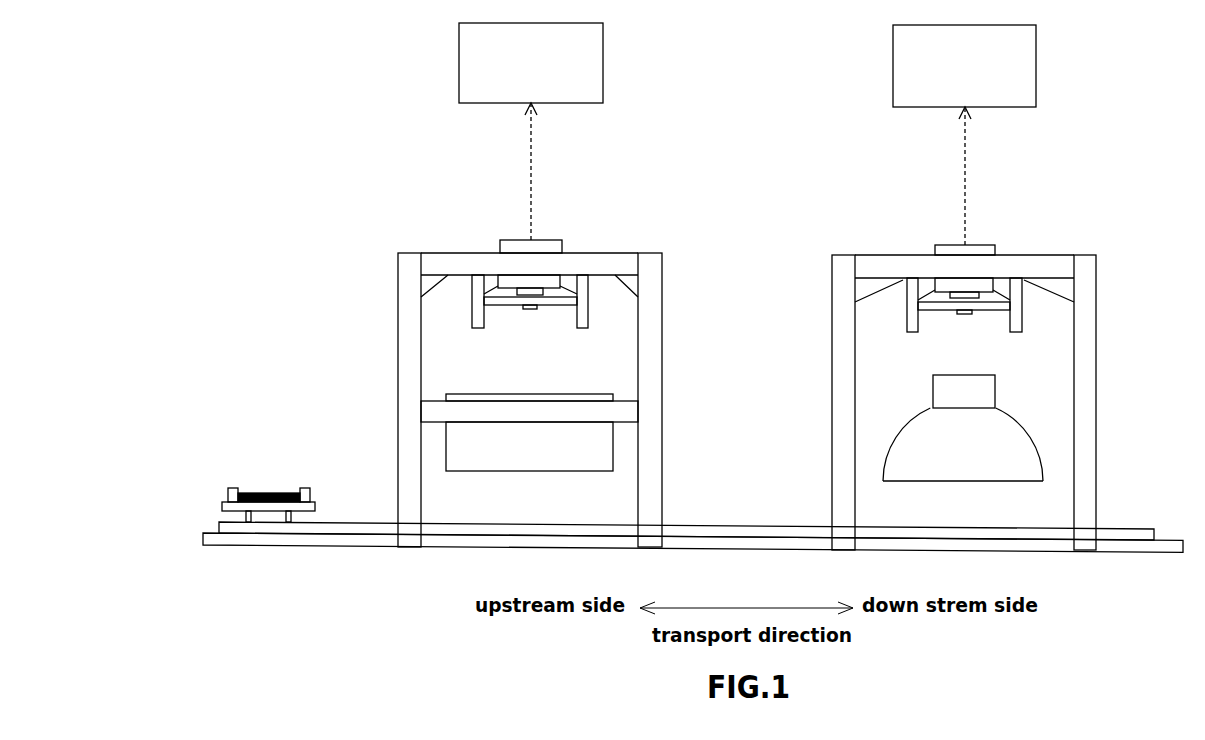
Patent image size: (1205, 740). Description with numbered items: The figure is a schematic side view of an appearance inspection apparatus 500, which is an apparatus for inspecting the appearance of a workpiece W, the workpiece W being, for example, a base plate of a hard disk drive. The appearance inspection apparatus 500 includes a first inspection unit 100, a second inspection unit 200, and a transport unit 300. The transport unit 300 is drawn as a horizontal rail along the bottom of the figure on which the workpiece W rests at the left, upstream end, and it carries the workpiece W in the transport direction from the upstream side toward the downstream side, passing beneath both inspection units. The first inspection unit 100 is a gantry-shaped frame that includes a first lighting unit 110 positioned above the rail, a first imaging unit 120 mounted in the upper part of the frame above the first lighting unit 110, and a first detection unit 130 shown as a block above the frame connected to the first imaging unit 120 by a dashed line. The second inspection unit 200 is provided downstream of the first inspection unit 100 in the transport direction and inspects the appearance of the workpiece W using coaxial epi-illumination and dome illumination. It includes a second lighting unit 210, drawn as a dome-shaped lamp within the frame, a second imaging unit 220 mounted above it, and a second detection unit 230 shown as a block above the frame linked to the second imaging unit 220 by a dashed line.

The appearance inspection apparatus 500 is at (253, 102).
The first inspection unit 100 is at (412, 237).
The first lighting unit 110 is at (535, 458).
The first imaging unit 120 is at (532, 310).
The first detection unit 130 is at (553, 79).
The second inspection unit 200 is at (820, 240).
The second lighting unit 210 is at (1003, 450).
The second imaging unit 220 is at (963, 314).
The second detection unit 230 is at (988, 81).
The transport unit 300 is at (375, 528).
The workpiece W is at (263, 492).